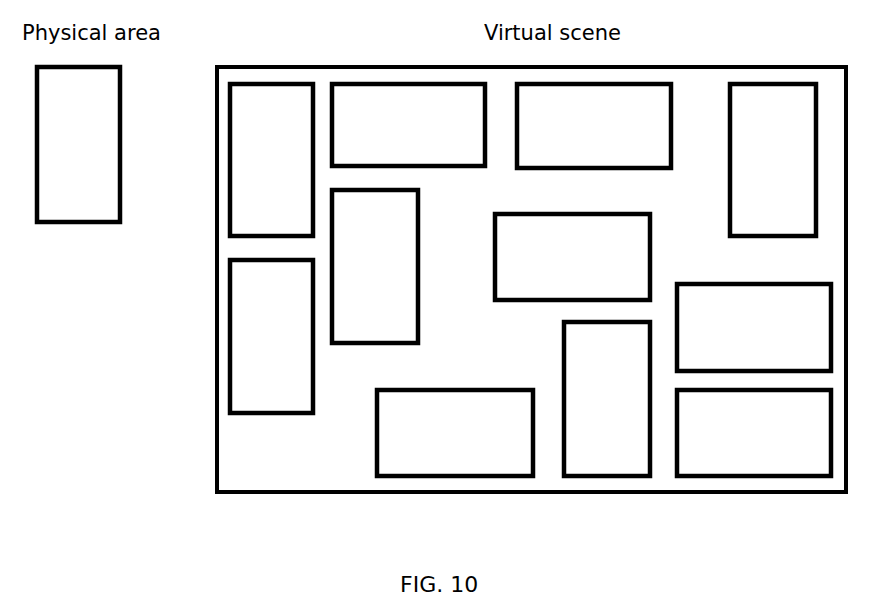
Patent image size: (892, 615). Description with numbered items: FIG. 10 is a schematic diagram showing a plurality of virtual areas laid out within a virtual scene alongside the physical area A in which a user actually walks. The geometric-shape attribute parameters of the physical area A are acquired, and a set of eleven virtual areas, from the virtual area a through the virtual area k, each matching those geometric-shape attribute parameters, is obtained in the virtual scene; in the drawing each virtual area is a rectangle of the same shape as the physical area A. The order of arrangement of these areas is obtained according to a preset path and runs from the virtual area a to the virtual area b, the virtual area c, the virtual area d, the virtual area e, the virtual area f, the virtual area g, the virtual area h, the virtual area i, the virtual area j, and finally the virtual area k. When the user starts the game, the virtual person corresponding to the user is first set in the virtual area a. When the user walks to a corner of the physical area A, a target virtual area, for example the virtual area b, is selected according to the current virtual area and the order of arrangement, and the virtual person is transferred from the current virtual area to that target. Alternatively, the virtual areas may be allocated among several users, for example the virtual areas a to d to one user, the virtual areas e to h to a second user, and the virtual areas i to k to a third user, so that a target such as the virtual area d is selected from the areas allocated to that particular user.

The physical area A is at (78, 144).
The virtual area a is at (271, 160).
The virtual area b is at (271, 336).
The virtual area c is at (455, 433).
The virtual area d is at (607, 399).
The virtual area e is at (754, 433).
The virtual area f is at (754, 327).
The virtual area g is at (773, 160).
The virtual area h is at (594, 126).
The virtual area i is at (408, 125).
The virtual area j is at (375, 266).
The virtual area k is at (572, 257).